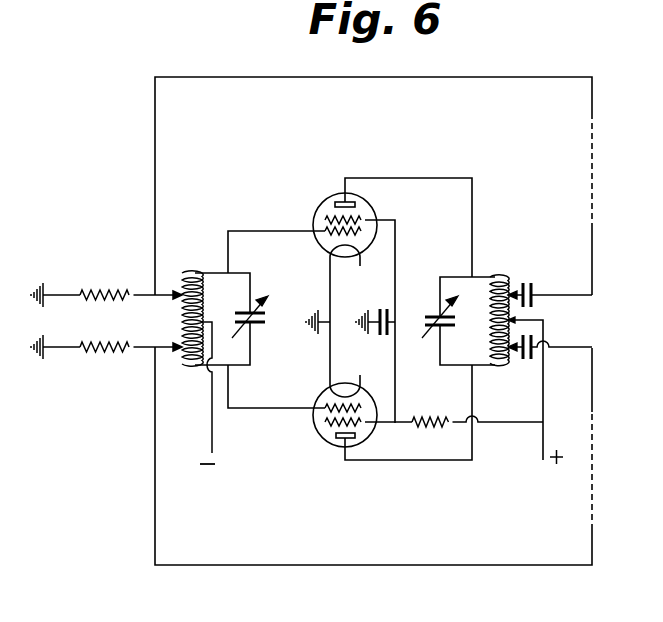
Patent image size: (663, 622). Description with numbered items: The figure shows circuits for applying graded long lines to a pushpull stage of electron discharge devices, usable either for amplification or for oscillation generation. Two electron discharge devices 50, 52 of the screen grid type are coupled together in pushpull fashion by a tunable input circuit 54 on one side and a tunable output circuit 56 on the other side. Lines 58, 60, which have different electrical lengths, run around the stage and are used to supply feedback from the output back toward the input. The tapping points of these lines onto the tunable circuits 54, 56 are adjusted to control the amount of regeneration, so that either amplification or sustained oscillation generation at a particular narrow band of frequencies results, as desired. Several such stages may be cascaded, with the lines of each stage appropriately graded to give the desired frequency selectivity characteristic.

The electron discharge device 50 is at (362, 213).
The electron discharge device 52 is at (321, 427).
The tunable input circuit 54 is at (247, 290).
The tunable output circuit 56 is at (481, 281).
The line 58 is at (343, 77).
The line 60 is at (385, 566).